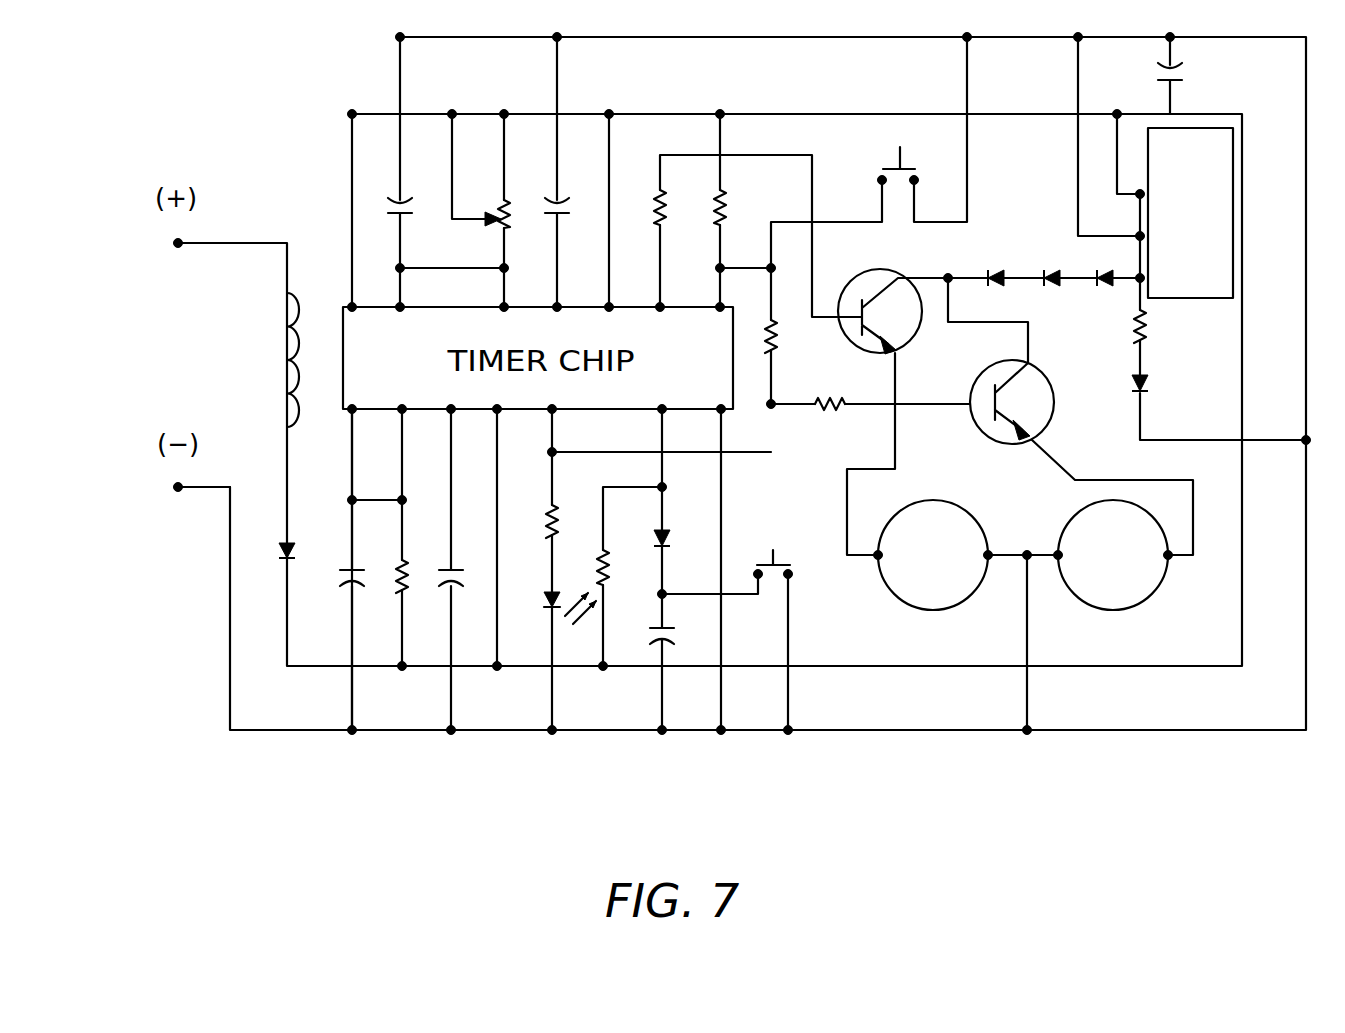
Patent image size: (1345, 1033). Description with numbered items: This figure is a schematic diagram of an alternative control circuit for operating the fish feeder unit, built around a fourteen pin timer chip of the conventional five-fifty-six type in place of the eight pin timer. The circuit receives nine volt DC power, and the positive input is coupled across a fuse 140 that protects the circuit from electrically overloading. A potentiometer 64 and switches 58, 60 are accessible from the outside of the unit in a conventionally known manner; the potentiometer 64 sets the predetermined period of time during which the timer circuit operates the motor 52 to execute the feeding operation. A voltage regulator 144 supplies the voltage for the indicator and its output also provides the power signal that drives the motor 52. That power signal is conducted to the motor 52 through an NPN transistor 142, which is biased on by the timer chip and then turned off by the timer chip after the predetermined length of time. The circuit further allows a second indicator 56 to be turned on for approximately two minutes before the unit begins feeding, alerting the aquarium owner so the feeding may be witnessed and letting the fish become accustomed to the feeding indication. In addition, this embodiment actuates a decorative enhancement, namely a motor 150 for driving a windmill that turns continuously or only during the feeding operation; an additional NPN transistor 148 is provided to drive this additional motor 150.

The fuse 140 is at (287, 341).
The potentiometer 64 is at (507, 229).
The switch 58 is at (898, 154).
The NPN transistor 142 is at (876, 270).
The voltage regulator 144 is at (1197, 298).
The additional NPN transistor 148 is at (1003, 445).
The second indicator 56 is at (546, 600).
The switch 60 is at (773, 550).
The motor 52 is at (906, 601).
The motor 150 is at (1118, 609).